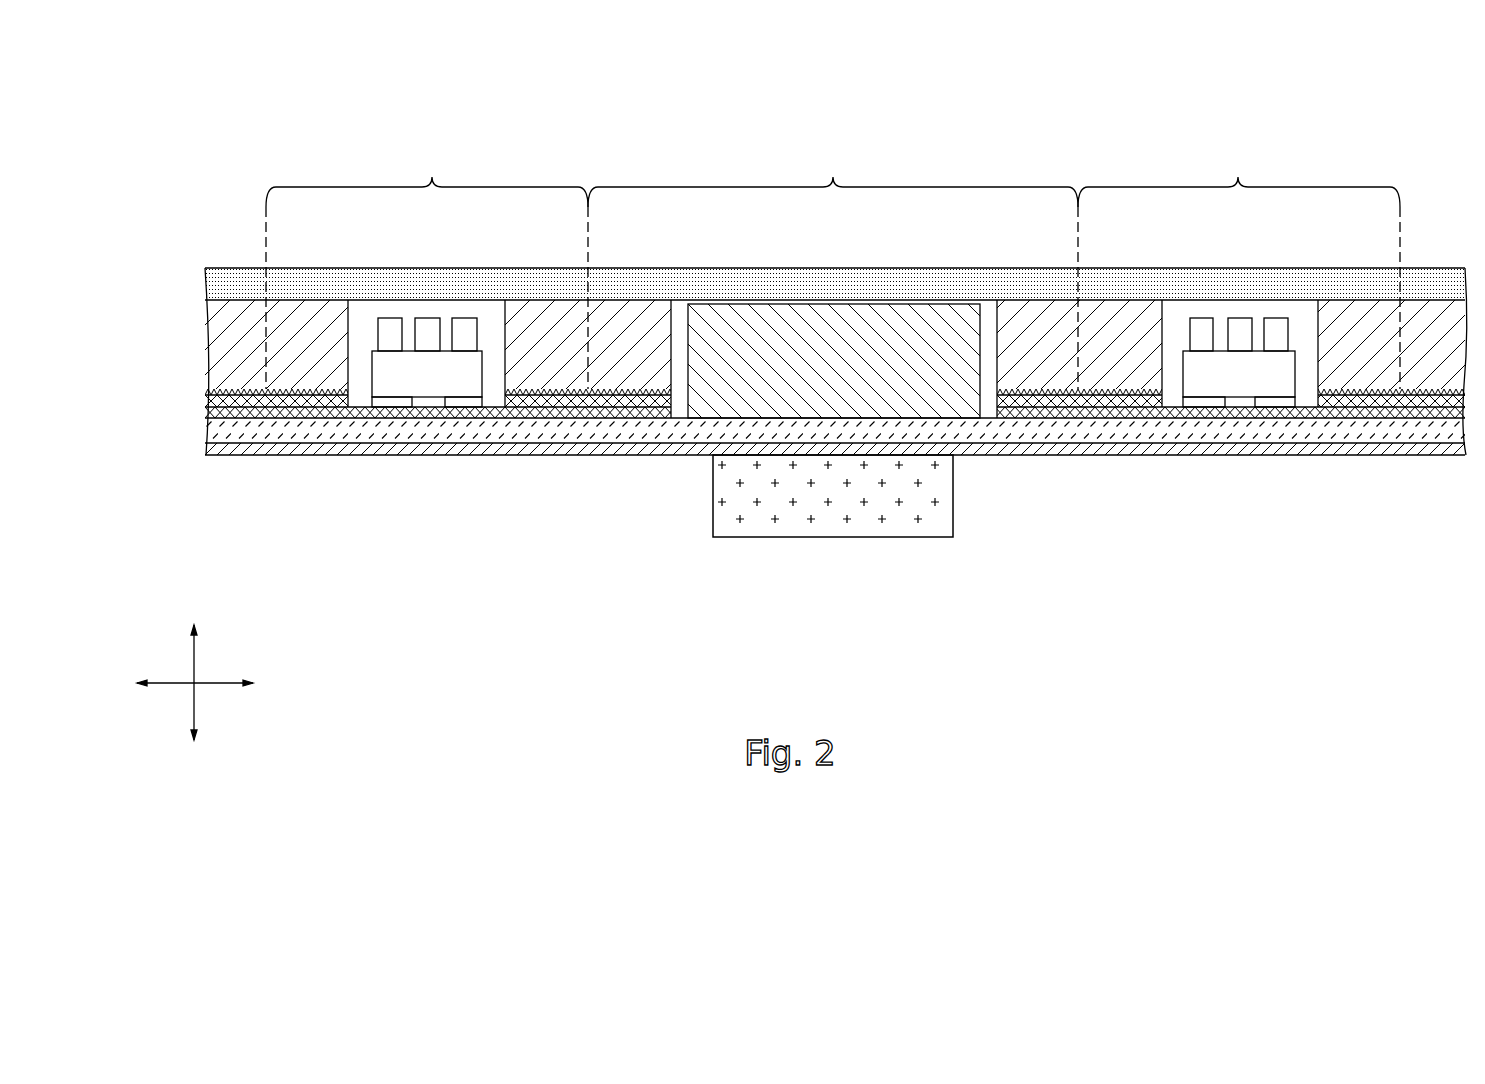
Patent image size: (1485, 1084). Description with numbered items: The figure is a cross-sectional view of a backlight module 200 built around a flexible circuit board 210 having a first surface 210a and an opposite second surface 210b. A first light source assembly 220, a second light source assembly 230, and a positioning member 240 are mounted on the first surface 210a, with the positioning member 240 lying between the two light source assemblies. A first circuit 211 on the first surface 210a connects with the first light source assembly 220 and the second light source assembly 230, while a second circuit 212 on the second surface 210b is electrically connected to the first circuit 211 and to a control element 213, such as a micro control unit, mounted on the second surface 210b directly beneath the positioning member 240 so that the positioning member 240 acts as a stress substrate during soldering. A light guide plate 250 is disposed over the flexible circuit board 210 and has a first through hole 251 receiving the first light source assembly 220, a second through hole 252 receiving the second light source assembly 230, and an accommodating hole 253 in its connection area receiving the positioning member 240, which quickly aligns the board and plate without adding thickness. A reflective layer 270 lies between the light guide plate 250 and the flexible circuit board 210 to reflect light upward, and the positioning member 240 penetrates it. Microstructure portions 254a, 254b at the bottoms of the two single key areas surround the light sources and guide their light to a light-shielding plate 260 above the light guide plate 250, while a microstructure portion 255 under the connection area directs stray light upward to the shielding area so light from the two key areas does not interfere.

The backlight module 200 is at (169, 127).
The flexible circuit board 210 is at (212, 428).
The first surface 210a is at (487, 430).
The second surface 210b is at (563, 444).
The first circuit 211 is at (210, 412).
The second circuit 212 is at (212, 448).
The control element 213 is at (842, 530).
The first light source assembly 220 is at (356, 412).
The second light source assembly 230 is at (1169, 415).
The positioning member 240 is at (842, 312).
The light guide plate 250 is at (215, 328).
The first through hole 251 is at (342, 331).
The second through hole 252 is at (1328, 382).
The accommodating hole 253 is at (676, 431).
The microstructure portion 254a is at (320, 395).
The microstructure portion 254b is at (1097, 393).
The microstructure portion 255 is at (627, 393).
The light-shielding plate 260 is at (213, 283).
The reflective layer 270 is at (210, 389).